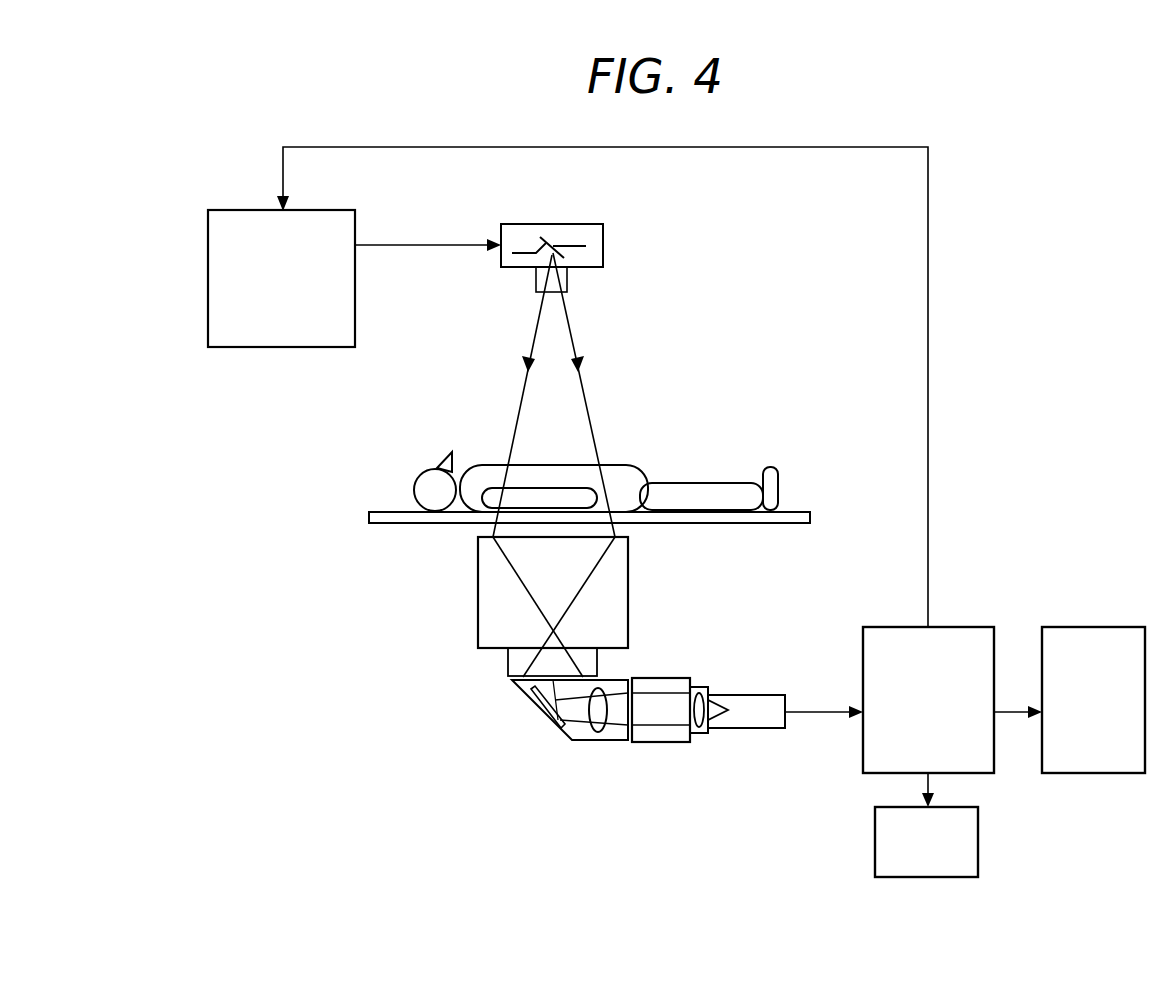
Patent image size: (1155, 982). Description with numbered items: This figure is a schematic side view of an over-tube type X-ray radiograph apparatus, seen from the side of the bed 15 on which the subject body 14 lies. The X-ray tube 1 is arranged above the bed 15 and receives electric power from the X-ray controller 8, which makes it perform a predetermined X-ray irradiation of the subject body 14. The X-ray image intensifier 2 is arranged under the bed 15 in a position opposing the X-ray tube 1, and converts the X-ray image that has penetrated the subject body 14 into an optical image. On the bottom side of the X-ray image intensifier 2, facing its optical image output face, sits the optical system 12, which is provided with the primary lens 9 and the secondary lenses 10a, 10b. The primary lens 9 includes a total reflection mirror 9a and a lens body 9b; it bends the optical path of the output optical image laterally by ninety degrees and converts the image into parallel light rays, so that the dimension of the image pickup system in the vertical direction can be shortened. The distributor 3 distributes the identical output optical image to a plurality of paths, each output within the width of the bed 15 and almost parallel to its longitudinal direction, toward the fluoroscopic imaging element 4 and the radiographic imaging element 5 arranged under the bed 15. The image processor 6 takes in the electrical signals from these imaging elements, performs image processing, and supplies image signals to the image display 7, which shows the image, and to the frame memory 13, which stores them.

The X-ray tube 1 is at (603, 243).
The X-ray image intensifier 2 is at (628, 570).
The distributor 3 is at (657, 743).
The fluoroscopic imaging element 4 is at (755, 678).
The radiographic imaging element 5 is at (755, 723).
The image processor 6 is at (962, 627).
The image display 7 is at (1096, 627).
The X-ray controller 8 is at (208, 277).
The primary lens 9 is at (535, 754).
The total reflection mirror 9a is at (538, 710).
The lens body 9b is at (595, 732).
The secondary lens 10a is at (703, 687).
The secondary lens 10b is at (738, 728).
The optical system 12 is at (630, 752).
The frame memory 13 is at (978, 845).
The subject body 14 is at (633, 465).
The bed 15 is at (810, 517).